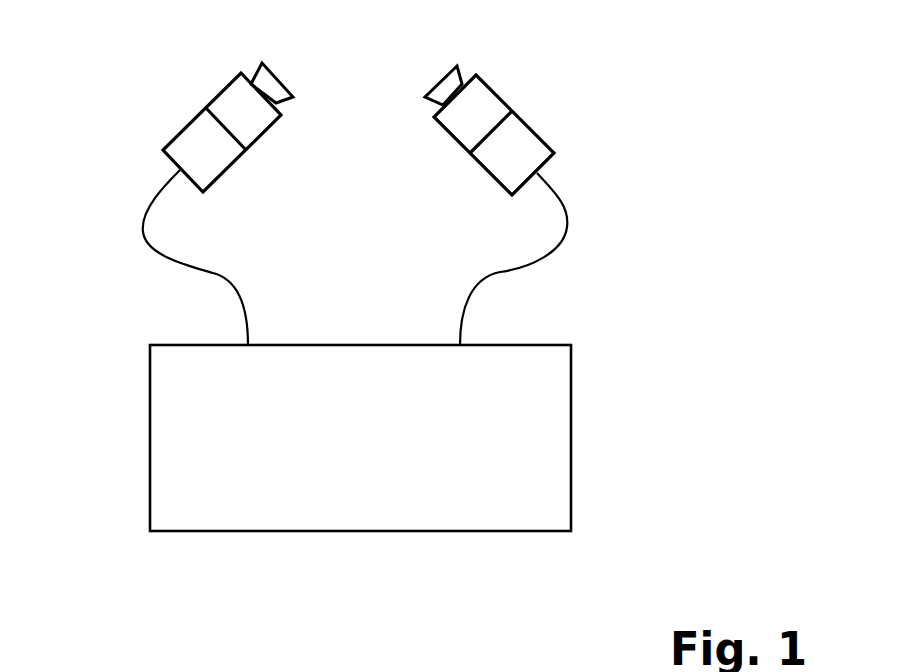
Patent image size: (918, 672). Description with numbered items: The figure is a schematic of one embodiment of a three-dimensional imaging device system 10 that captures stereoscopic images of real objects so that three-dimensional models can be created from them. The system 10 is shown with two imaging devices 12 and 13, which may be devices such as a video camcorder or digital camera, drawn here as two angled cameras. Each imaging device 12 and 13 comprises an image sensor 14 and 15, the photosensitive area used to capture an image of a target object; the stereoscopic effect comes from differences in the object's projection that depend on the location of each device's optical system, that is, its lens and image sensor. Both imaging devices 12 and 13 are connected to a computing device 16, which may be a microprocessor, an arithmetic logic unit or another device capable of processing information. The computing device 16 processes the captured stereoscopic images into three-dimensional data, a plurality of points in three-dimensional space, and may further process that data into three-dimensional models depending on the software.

The 3-D imaging device system 10 is at (67, 34).
The imaging device 12 is at (223, 90).
The imaging device 13 is at (497, 93).
The image sensor 14 is at (230, 134).
The image sensor 15 is at (484, 140).
The computing device 16 is at (572, 398).